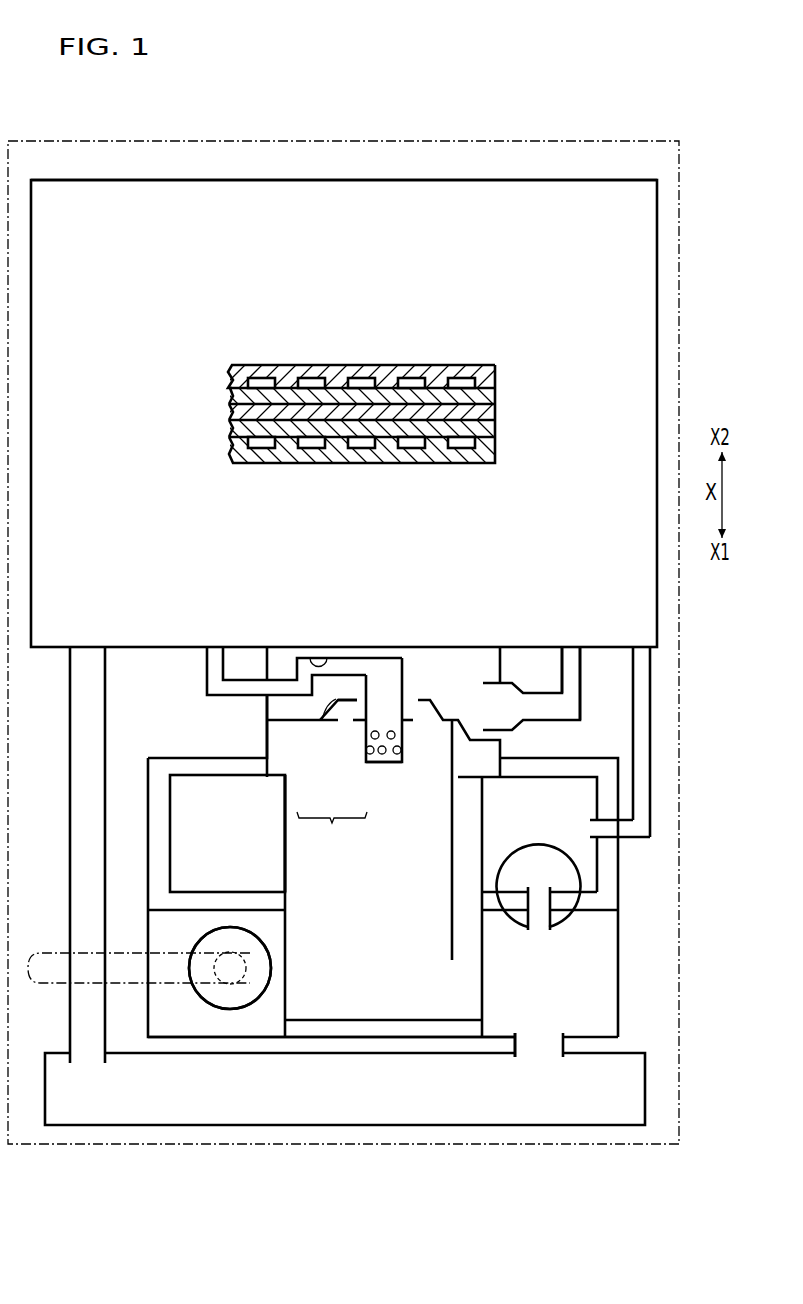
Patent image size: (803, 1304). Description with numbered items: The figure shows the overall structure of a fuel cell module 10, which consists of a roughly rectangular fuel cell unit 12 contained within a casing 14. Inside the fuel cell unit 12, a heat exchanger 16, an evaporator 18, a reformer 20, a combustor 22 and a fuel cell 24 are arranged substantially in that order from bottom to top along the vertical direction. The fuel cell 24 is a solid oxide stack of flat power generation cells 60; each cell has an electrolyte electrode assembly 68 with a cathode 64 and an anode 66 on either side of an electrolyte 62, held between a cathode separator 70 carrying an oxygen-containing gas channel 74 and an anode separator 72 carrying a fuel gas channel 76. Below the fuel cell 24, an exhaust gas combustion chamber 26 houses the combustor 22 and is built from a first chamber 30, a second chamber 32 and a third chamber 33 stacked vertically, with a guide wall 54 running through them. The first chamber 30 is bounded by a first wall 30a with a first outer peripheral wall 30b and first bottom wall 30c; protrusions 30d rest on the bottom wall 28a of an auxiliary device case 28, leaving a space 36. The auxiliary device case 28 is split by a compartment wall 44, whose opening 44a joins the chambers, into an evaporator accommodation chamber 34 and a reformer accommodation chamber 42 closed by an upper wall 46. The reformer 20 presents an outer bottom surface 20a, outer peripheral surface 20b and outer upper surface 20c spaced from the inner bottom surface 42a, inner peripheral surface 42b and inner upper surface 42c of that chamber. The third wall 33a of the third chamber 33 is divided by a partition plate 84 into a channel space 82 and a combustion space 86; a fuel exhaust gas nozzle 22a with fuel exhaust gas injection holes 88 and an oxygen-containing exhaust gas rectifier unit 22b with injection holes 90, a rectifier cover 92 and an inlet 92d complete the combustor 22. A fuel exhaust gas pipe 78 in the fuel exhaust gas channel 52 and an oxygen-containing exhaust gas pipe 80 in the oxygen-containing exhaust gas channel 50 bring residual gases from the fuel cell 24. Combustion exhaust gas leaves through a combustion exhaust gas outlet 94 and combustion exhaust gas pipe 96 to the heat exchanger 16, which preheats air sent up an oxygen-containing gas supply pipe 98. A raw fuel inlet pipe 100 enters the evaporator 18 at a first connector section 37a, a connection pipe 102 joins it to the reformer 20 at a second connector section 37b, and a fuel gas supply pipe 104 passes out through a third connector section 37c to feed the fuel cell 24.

The fuel cell module 10 is at (592, 70).
The fuel cell unit 12 is at (663, 256).
The casing 14 is at (648, 140).
The heat exchanger 16 is at (645, 1084).
The evaporator 18 is at (573, 993).
The reformer 20 is at (170, 850).
The outer bottom surface 20a is at (285, 903).
The outer peripheral surface 20b is at (147, 870).
The outer upper surface 20c is at (220, 773).
The combustor 22 is at (462, 673).
The fuel exhaust gas nozzle 22a is at (382, 693).
The oxygen-containing exhaust gas rectifier unit 22b is at (332, 830).
The fuel cell 24 is at (370, 180).
The exhaust gas combustion chamber 26 is at (299, 864).
The auxiliary device case 28 is at (147, 1020).
The bottom wall 28a is at (468, 1038).
The first chamber 30 is at (355, 1005).
The first wall 30a is at (230, 968).
The first outer peripheral wall 30b is at (287, 955).
The first bottom wall 30c is at (393, 1020).
The protrusion 30d is at (288, 1027).
The second chamber 32 is at (285, 847).
The third chamber 33 is at (282, 745).
The third wall 33a is at (267, 752).
The evaporator accommodation chamber 34 is at (598, 980).
The space 36 is at (440, 1027).
The first connector section 37a is at (140, 992).
The second connector section 37b is at (563, 917).
The third connector section 37c is at (626, 843).
The reformer accommodation chamber 42 is at (152, 818).
The inner bottom surface 42a is at (573, 907).
The inner peripheral surface 42b is at (150, 833).
The inner upper surface 42c is at (157, 757).
The compartment wall 44 is at (598, 917).
The opening 44a is at (285, 910).
The upper wall 46 is at (527, 758).
The oxygen-containing exhaust gas channel 50 is at (554, 720).
The fuel exhaust gas channel 52 is at (321, 661).
The guide wall 54 is at (452, 827).
The power generation cell 60 is at (315, 421).
The electrolyte 62 is at (240, 412).
The cathode 64 is at (245, 429).
The anode 66 is at (240, 397).
The electrolyte electrode assembly 68 is at (310, 414).
The cathode separator 70 is at (286, 452).
The anode separator 72 is at (284, 376).
The oxygen-containing gas channel 74 is at (462, 447).
The fuel gas channel 76 is at (460, 384).
The fuel exhaust gas pipe 78 is at (207, 665).
The oxygen-containing exhaust gas pipe 80 is at (582, 686).
The channel space 82 is at (443, 662).
The partition plate 84 is at (468, 729).
The combustion space 86 is at (497, 757).
The fuel exhaust gas injection hole 88 is at (385, 768).
The oxygen-containing exhaust gas injection hole 90 is at (346, 722).
The rectifier cover 92 is at (324, 714).
The oxygen-containing exhaust gas inlet 92d is at (357, 698).
The combustion exhaust gas outlet 94 is at (518, 1037).
The combustion exhaust gas pipe 96 is at (565, 1045).
The oxygen-containing gas supply pipe 98 is at (90, 663).
The raw fuel inlet pipe 100 is at (50, 952).
The connection pipe 102 is at (527, 902).
The fuel gas supply pipe 104 is at (631, 667).